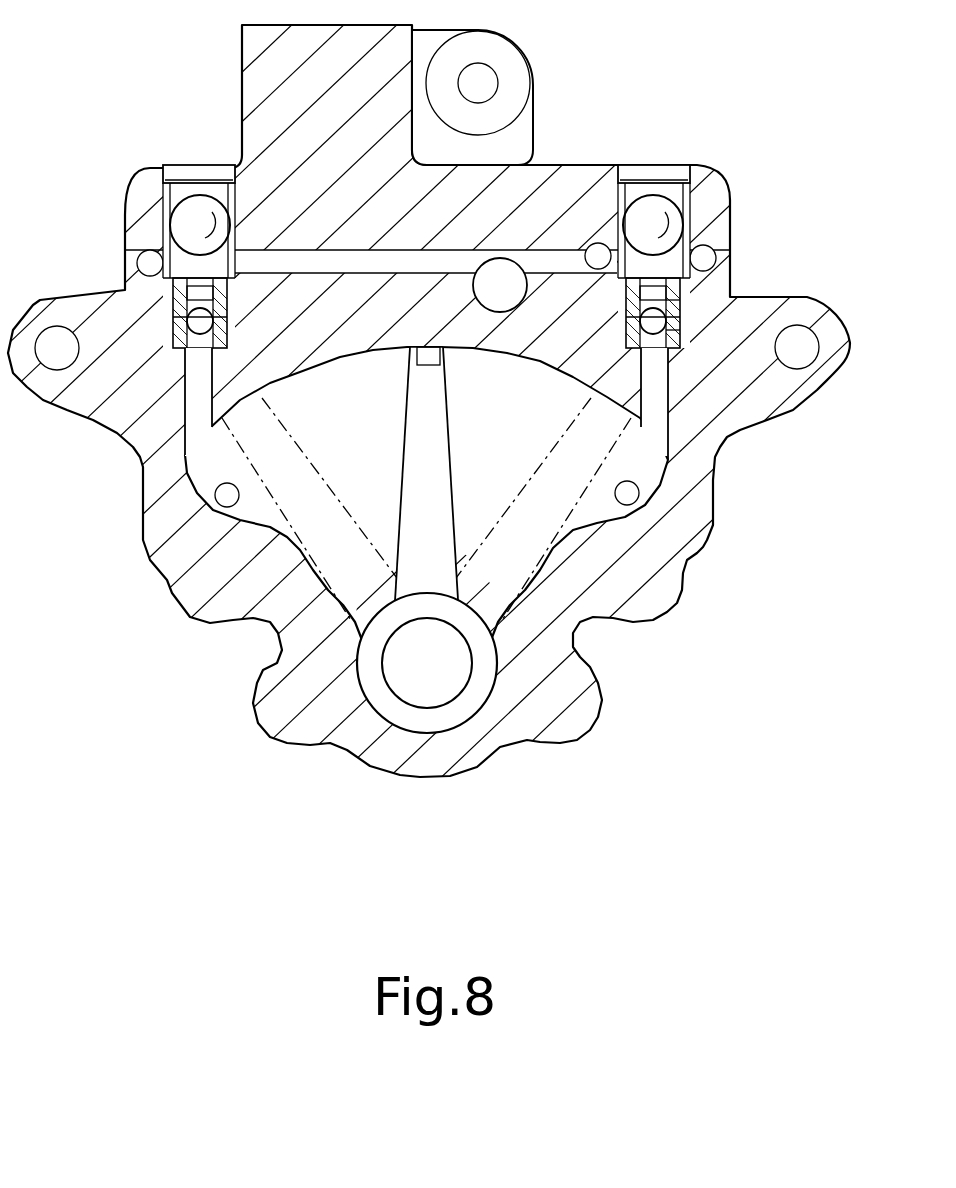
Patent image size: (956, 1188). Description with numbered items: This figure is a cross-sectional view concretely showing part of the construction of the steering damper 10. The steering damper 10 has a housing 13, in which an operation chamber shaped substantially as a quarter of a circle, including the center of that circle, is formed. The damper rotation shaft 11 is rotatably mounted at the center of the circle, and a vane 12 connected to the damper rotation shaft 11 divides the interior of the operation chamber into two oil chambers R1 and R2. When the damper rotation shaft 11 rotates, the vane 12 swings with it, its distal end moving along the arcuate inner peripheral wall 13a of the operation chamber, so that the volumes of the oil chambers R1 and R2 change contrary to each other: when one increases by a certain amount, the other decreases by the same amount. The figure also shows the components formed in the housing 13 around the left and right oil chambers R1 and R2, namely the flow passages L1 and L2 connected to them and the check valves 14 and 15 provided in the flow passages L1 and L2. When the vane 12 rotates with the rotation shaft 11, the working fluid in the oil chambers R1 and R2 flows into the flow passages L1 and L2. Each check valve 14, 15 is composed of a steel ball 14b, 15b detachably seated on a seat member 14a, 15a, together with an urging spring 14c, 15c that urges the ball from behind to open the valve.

The steering damper 10 is at (478, 450).
The damper rotation shaft 11 is at (440, 683).
The vane 12 is at (455, 482).
The housing 13 is at (650, 602).
The arcuate inner peripheral wall 13a is at (355, 350).
The check valve 14 is at (190, 266).
The seat member 14a is at (225, 340).
The steel ball 14b is at (232, 295).
The urging spring 14c is at (237, 252).
The check valve 15 is at (676, 273).
The seat member 15a is at (681, 338).
The steel ball 15b is at (626, 327).
The urging spring 15c is at (623, 288).
The flow passage L1 is at (190, 395).
The flow passage L2 is at (660, 398).
The oil chamber R1 is at (206, 472).
The oil chamber R2 is at (643, 467).